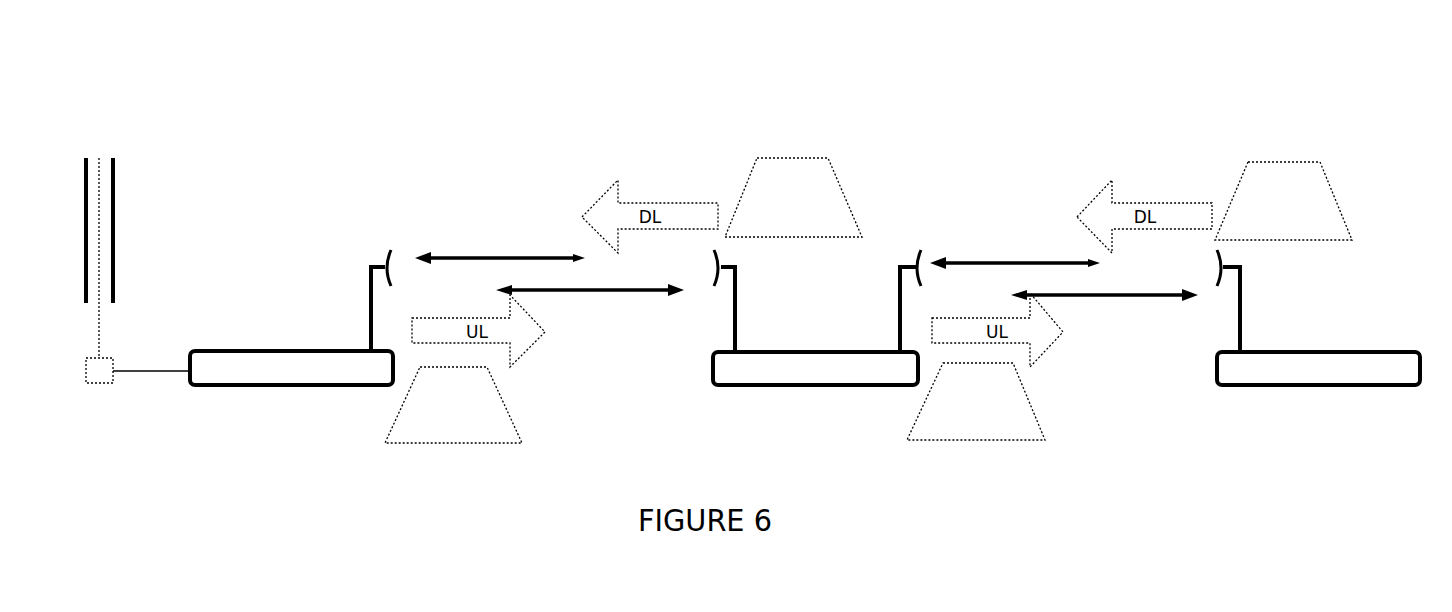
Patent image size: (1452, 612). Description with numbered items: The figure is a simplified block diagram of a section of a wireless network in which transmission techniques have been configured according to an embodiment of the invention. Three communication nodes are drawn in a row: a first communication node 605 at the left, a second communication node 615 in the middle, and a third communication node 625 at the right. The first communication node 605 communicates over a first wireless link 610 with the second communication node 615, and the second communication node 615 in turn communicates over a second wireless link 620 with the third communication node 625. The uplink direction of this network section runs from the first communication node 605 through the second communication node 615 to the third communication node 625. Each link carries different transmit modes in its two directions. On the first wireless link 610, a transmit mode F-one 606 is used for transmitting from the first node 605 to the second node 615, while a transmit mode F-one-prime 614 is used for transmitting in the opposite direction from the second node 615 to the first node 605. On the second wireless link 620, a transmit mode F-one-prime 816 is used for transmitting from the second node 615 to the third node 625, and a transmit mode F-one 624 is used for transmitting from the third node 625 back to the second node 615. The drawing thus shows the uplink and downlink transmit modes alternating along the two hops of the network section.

The first communication node 605 is at (291, 317).
The first wireless link 610 is at (503, 289).
The second communication node 615 is at (817, 317).
The second wireless link 620 is at (1018, 294).
The third communication node 625 is at (1318, 317).
The transmit mode F1 606 is at (453, 405).
The transmit mode F1' 614 is at (793, 197).
The uplink F1' QPSK transmission 816 is at (976, 401).
The transmit mode F1 624 is at (1283, 201).